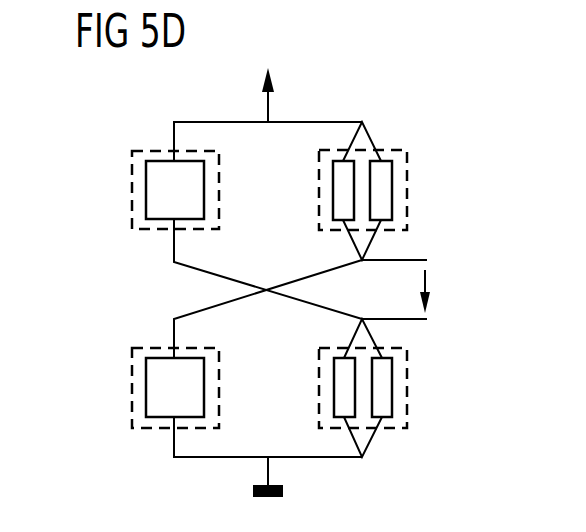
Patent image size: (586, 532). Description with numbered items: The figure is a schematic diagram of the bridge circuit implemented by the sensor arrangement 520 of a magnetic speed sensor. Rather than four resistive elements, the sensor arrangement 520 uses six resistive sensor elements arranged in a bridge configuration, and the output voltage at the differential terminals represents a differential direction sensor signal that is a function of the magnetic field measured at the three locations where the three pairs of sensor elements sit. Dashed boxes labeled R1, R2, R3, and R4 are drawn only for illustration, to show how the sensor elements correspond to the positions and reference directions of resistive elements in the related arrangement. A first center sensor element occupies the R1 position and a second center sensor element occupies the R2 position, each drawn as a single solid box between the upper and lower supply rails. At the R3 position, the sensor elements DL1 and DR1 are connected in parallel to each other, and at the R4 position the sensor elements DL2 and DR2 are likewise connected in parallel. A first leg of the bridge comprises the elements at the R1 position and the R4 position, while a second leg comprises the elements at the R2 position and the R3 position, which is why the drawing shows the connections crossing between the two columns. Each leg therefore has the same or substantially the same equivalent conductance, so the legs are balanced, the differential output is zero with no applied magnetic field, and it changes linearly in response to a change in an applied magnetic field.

The sensor arrangement 520 is at (359, 74).
The resistive element position R1 is at (132, 189).
The resistive element position R2 is at (132, 386).
The resistive element position R3 is at (360, 190).
The resistive element position R4 is at (363, 388).
The sensor element DL1 is at (333, 190).
The sensor element DR1 is at (392, 200).
The sensor element DL2 is at (334, 390).
The sensor element DR2 is at (392, 400).